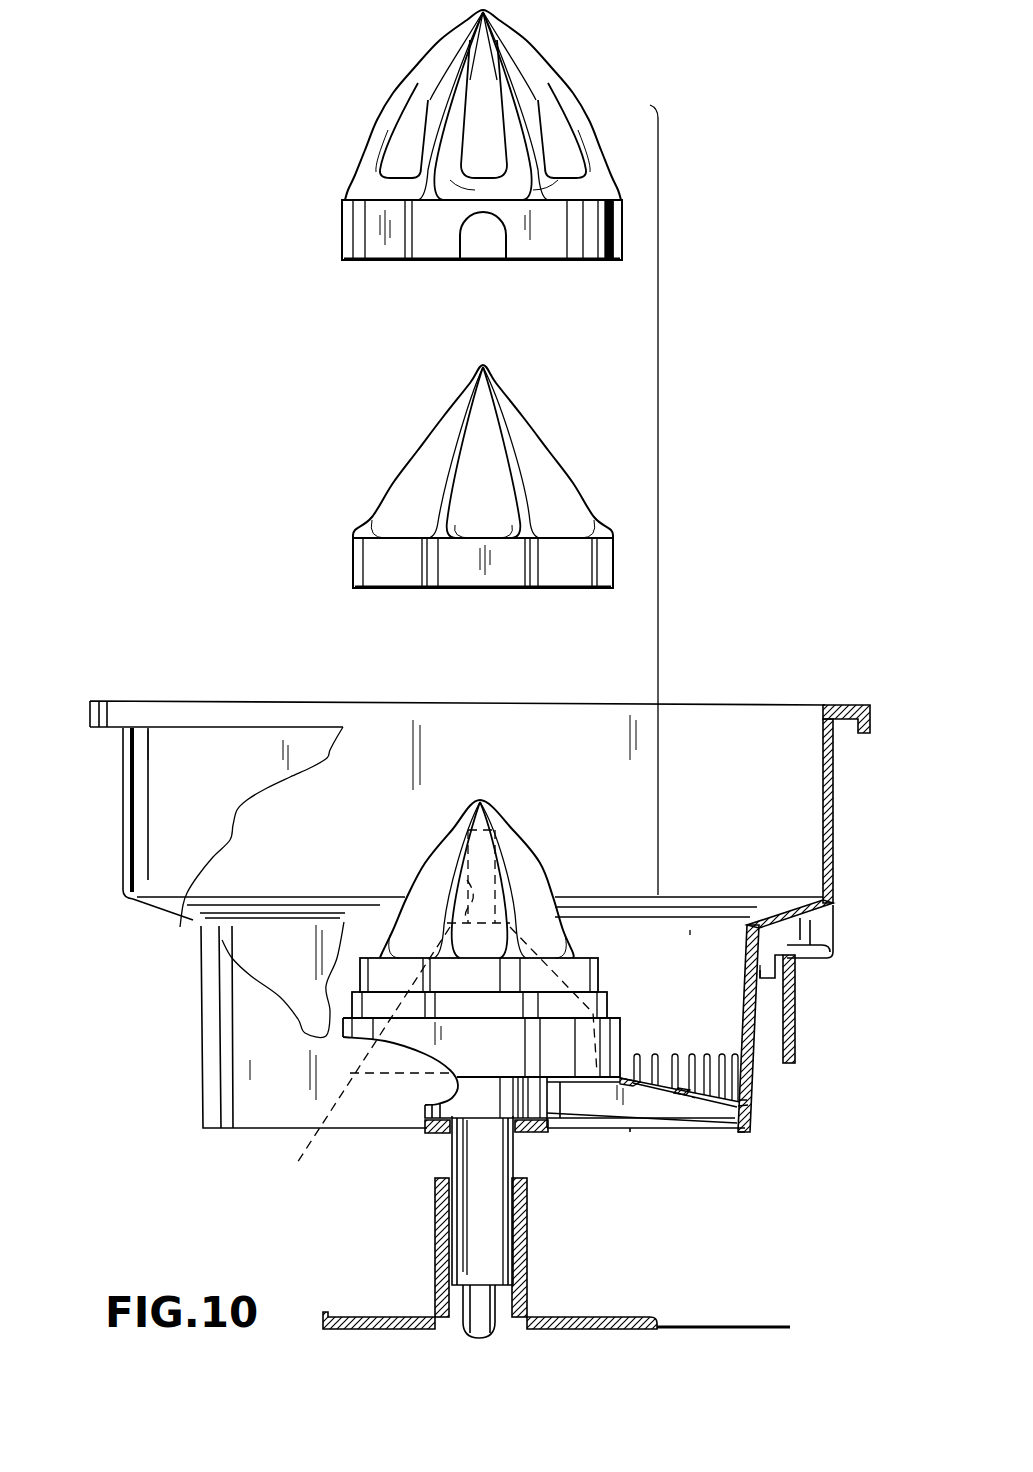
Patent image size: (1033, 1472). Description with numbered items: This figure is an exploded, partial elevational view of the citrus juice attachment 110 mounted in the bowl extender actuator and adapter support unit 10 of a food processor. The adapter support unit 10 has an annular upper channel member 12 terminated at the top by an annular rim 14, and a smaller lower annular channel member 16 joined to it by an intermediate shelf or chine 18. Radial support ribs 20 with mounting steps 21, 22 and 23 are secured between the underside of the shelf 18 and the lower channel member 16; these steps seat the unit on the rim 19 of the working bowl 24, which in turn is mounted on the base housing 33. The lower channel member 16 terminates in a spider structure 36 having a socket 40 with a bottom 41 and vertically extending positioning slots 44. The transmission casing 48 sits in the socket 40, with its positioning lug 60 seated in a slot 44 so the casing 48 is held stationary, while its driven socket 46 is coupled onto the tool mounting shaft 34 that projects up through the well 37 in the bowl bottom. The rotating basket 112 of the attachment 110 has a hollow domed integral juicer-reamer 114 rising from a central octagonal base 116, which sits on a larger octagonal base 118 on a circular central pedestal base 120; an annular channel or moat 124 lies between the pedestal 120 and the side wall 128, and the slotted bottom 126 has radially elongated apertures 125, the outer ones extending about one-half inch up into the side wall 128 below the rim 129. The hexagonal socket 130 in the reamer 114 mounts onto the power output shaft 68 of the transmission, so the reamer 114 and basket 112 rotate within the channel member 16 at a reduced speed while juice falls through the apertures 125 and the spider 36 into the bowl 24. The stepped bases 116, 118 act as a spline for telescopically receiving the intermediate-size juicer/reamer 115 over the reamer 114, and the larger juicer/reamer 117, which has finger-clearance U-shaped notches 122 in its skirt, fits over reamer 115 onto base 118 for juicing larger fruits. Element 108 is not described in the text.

The bowl extender actuator and adapter support unit 10 is at (845, 850).
The upper channel member 12 is at (833, 786).
The annular rim 14 is at (872, 712).
The lower annular channel member 16 is at (242, 1008).
The intermediate shelf or chine 18 is at (144, 904).
The rim of working bowl 19 is at (835, 948).
The radial support ribs 20 is at (823, 925).
The mounting step 21 is at (803, 960).
The intermediate mounting step 22 is at (797, 1020).
The innermost mounting step 23 is at (762, 980).
The working bowl 24 is at (618, 1315).
The base housing 33 is at (720, 1326).
The tool mounting shaft 34 is at (478, 1305).
The spider structure 36 is at (675, 1126).
The well 37 is at (528, 1238).
The socket 40 is at (542, 1133).
The bottom of socket 41 is at (433, 1130).
The positioning slots 44 is at (548, 1092).
The driven socket 46 is at (512, 1162).
The transmission casing 48 is at (437, 1058).
The lugs 60 is at (550, 1087).
The power output shaft 68 is at (470, 880).
The ramp 108 is at (640, 1110).
The citrus juice attachment 110 is at (658, 472).
The rotating basket 112 is at (690, 942).
The juicer-reamer 114 is at (515, 830).
The intermediate-size juicer/reamer 115 is at (540, 425).
The octagonal base 116 is at (600, 970).
The larger juicer/reamer 117 is at (560, 62).
The larger octagonal base 118 is at (608, 1005).
The central pedestal base 120 is at (620, 1030).
The U-shaped notches 122 is at (462, 243).
The annular channel or moat 124 is at (687, 1044).
The radially elongated apertures 125 is at (748, 1105).
The slotted bottom 126 is at (692, 1097).
The side wall 128 is at (711, 960).
The rim 129 is at (760, 915).
The socket 130 is at (460, 920).